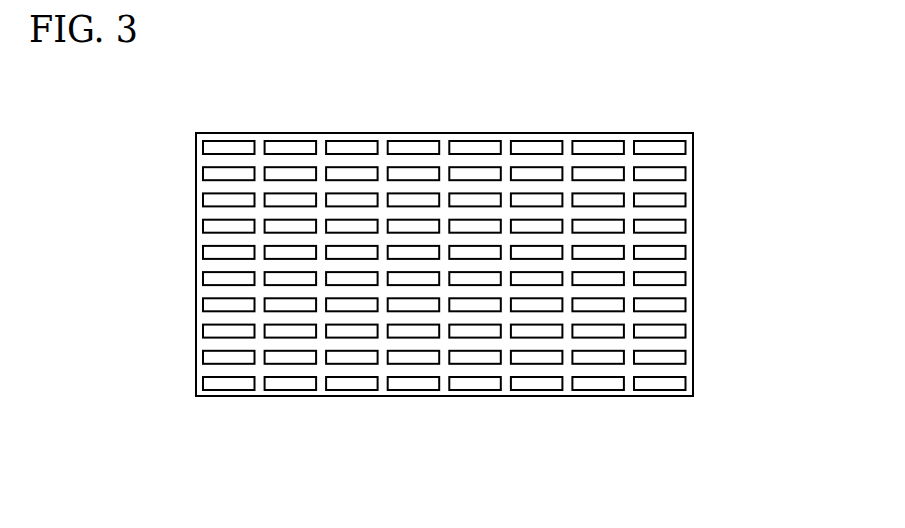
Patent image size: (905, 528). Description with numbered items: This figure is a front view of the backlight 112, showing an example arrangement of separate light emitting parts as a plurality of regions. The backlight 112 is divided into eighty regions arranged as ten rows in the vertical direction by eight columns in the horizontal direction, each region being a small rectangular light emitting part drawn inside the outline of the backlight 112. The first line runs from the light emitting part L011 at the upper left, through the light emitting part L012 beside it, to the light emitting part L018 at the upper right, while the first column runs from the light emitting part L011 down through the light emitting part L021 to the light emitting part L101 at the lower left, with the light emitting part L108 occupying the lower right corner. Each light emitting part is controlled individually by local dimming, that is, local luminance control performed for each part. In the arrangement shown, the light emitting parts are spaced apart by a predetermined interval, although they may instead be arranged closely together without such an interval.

The backlight 112 is at (777, 166).
The light emitting part L011 is at (230, 145).
The light emitting part L012 is at (290, 145).
The light emitting part L018 is at (660, 145).
The light emitting part L021 is at (215, 172).
The light emitting part L101 is at (229, 383).
The light emitting part L108 is at (658, 383).